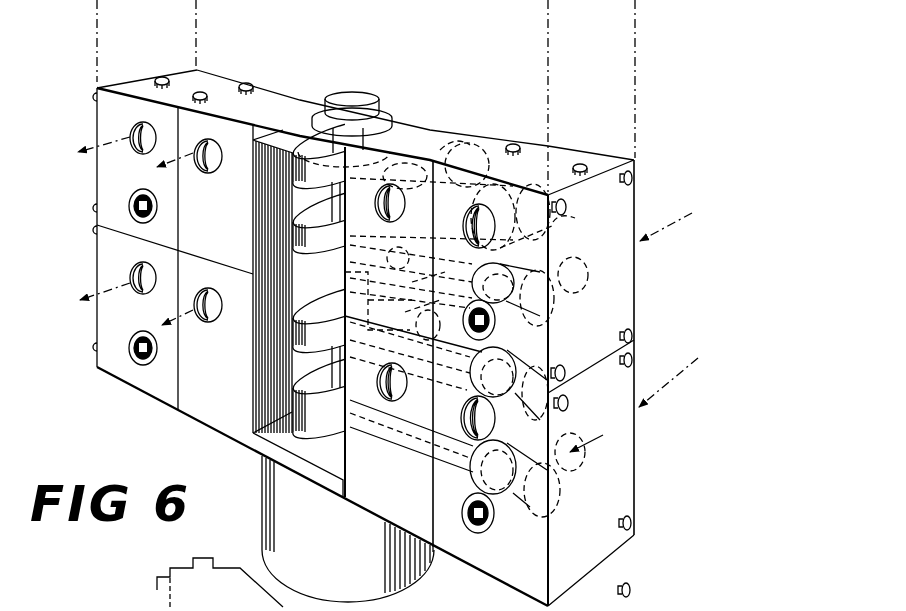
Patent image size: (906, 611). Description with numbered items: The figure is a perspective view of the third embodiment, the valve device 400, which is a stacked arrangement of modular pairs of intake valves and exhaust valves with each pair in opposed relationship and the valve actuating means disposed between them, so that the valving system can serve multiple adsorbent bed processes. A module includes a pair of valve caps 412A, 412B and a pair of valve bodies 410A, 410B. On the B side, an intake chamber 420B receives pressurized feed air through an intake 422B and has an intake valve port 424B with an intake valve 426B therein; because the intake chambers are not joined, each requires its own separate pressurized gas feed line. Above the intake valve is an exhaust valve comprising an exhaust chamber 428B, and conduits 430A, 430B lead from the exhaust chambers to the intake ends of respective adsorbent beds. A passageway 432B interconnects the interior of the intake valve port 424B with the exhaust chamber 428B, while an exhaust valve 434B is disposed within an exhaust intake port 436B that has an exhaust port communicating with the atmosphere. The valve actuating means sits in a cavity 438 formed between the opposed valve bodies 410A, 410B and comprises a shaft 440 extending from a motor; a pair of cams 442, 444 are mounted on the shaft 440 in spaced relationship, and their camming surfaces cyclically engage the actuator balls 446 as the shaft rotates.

The valve device 400 is at (313, 63).
The valve body 410A is at (285, 108).
The valve body 410B is at (420, 145).
The valve cap 412A is at (183, 70).
The valve cap 412B is at (621, 151).
The intake chamber 420B is at (583, 380).
The intake of pressurized feed air 422B is at (569, 278).
The intake valve port 424B is at (401, 312).
The intake valve 426B is at (406, 284).
The exhaust chamber 428B is at (565, 220).
The conduit 430A is at (136, 125).
The conduit 430B is at (480, 218).
The passageway 432B is at (557, 236).
The exhaust valve 434B is at (435, 175).
The exhaust intake port 436B is at (460, 185).
The cavity 438 is at (259, 142).
The shaft 440 is at (332, 196).
The cam 442 is at (293, 238).
The cam 444 is at (405, 158).
The actuator balls 446 is at (430, 175).